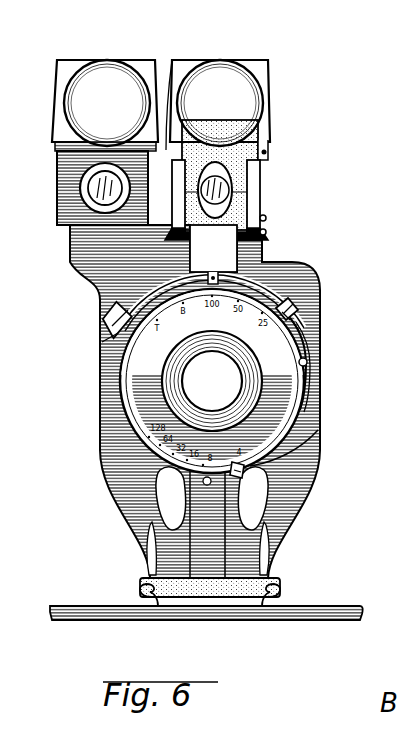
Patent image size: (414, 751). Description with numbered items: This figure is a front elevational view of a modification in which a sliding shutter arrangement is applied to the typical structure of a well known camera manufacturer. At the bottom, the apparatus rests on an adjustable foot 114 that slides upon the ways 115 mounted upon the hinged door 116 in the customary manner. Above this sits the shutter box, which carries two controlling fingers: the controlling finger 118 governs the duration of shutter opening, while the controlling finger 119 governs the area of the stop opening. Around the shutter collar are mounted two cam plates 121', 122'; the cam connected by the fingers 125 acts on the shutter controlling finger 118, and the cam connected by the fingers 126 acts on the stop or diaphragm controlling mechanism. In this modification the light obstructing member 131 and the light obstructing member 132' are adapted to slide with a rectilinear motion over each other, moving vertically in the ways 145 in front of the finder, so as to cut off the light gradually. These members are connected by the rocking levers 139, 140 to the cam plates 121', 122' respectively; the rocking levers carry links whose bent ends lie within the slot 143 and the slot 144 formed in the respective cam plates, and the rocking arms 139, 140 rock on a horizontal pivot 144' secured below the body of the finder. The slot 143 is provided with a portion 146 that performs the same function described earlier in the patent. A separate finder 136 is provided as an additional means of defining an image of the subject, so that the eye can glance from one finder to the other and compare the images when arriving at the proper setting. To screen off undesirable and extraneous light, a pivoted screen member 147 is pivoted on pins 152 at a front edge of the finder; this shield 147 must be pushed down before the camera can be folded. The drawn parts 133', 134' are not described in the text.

The pins 152 is at (166, 150).
The pivoted screen member 147 is at (265, 84).
The light obstructing member 132' is at (261, 161).
The ways 145 is at (264, 150).
The supporting post 134' is at (256, 193).
The lens 133' is at (262, 190).
The horizontal pivot 144' is at (252, 226).
The separate finder 136 is at (60, 172).
The rocking lever 140 is at (172, 240).
The light obstructing member 131 is at (192, 240).
The rocking lever 139 is at (213, 276).
The slot 144 is at (82, 319).
The cam plate 122' is at (78, 352).
The cam plate 121' is at (235, 285).
The slot 143 is at (290, 304).
The fingers 125 is at (288, 308).
The controlling finger 118 is at (300, 333).
The portion of slot 146 is at (308, 364).
The controlling finger 119 is at (258, 460).
The fingers 126 is at (246, 474).
The ways 115 is at (140, 603).
The adjustable foot 114 is at (142, 586).
The hinged door 116 is at (272, 618).